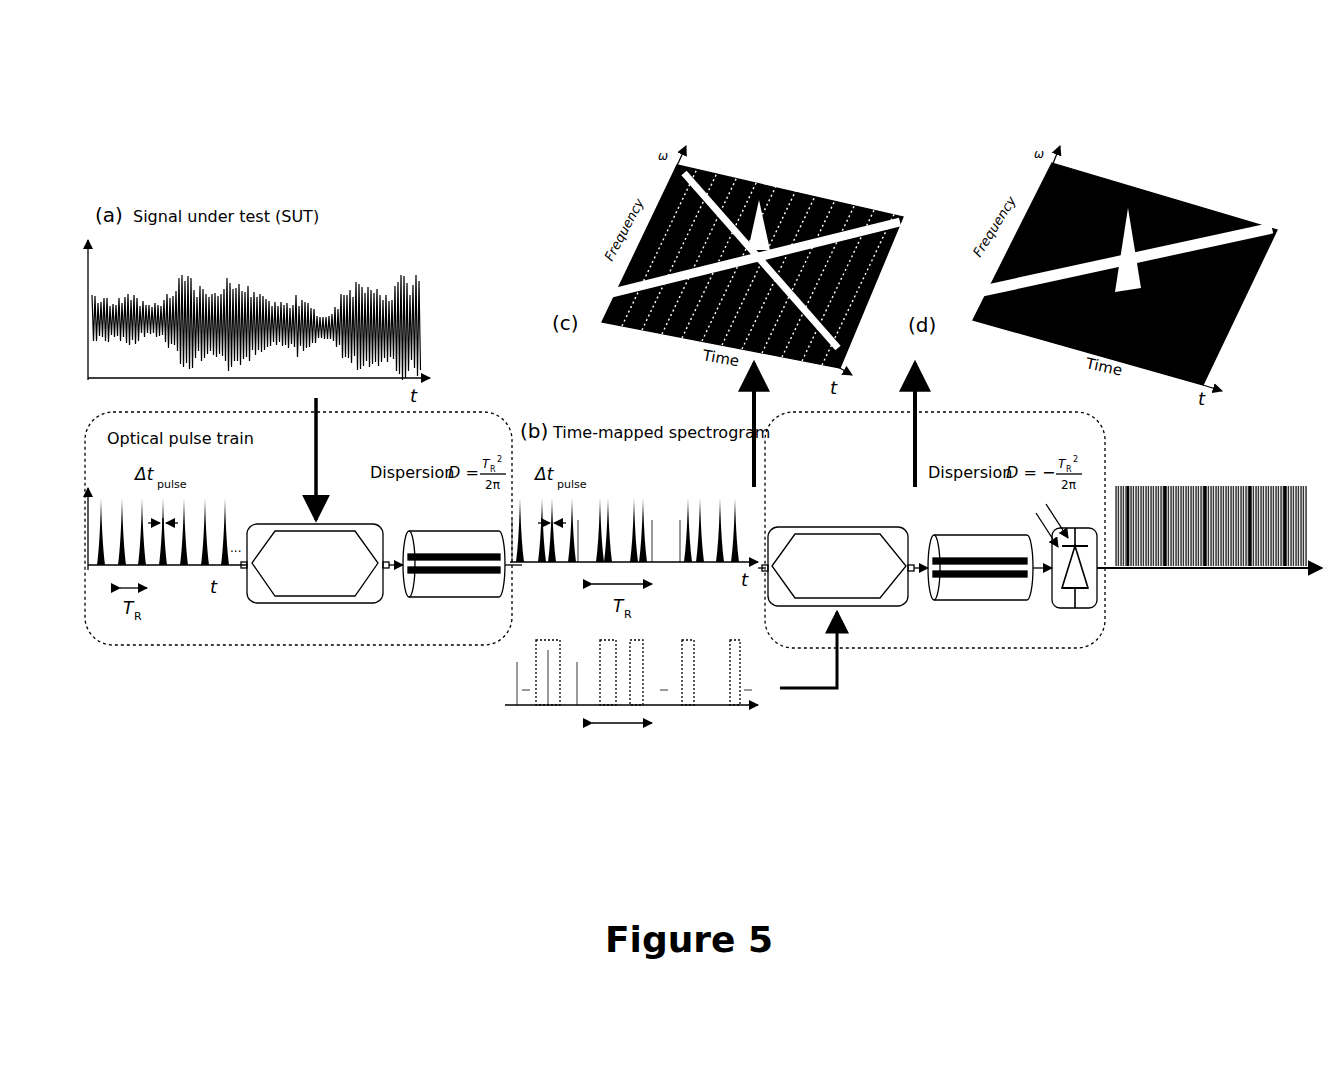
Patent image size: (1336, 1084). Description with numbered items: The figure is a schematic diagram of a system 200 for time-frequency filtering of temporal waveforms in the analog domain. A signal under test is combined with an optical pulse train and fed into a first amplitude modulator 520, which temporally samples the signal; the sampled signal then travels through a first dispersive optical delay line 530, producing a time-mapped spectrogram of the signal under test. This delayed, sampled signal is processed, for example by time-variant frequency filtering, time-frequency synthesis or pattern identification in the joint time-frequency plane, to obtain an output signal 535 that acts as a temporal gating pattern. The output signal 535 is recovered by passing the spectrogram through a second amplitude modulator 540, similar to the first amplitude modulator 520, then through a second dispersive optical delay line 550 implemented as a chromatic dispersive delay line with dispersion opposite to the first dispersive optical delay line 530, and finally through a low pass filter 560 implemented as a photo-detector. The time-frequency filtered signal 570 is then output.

The time-frequency filtering system 200 is at (300, 124).
The first amplitude modulator 520 is at (316, 618).
The first dispersive optical delay line 530 is at (451, 612).
The output signal 535 is at (732, 760).
The second amplitude modulator 540 is at (858, 648).
The second dispersive optical delay line 550 is at (978, 635).
The low pass filter 560 is at (1078, 648).
The time-frequency filtered signal 570 is at (1268, 620).